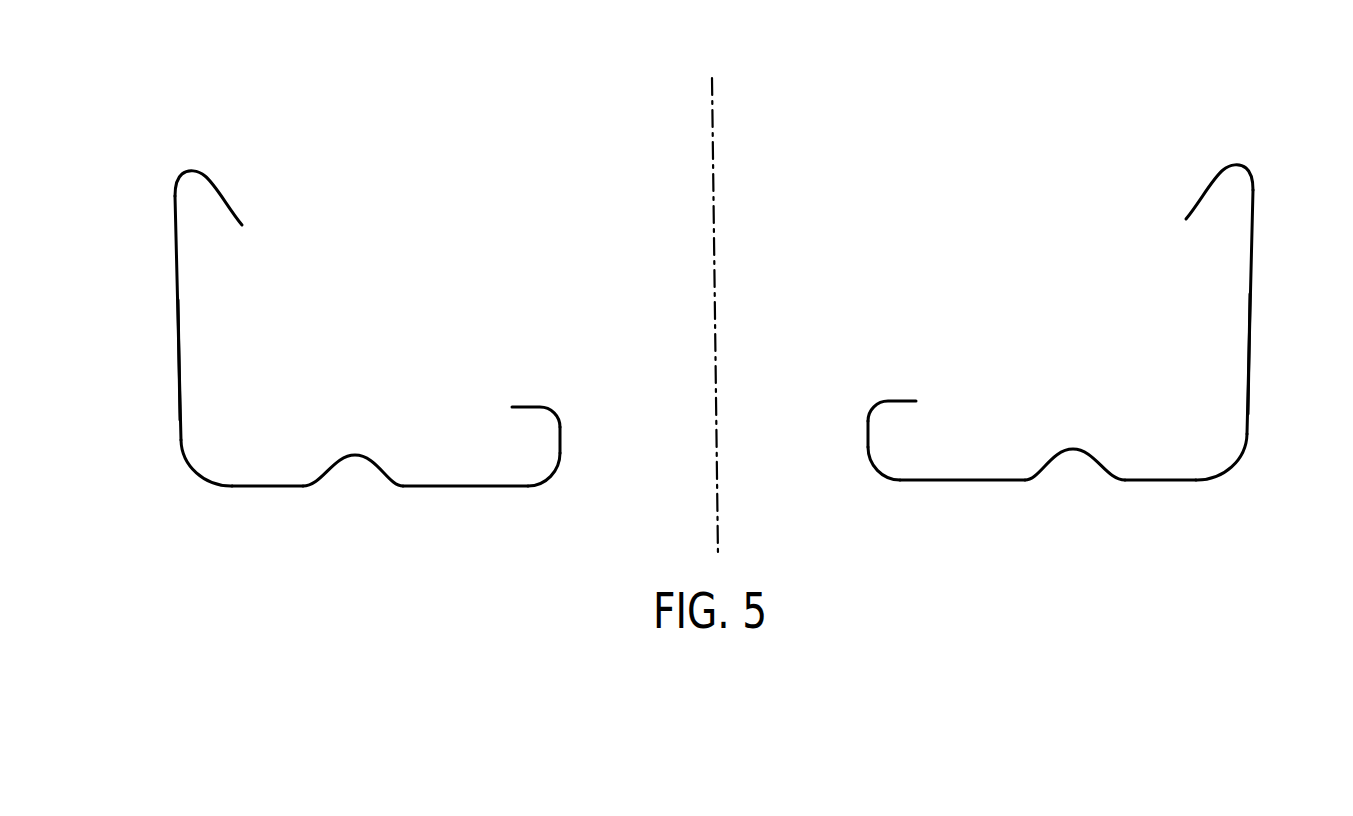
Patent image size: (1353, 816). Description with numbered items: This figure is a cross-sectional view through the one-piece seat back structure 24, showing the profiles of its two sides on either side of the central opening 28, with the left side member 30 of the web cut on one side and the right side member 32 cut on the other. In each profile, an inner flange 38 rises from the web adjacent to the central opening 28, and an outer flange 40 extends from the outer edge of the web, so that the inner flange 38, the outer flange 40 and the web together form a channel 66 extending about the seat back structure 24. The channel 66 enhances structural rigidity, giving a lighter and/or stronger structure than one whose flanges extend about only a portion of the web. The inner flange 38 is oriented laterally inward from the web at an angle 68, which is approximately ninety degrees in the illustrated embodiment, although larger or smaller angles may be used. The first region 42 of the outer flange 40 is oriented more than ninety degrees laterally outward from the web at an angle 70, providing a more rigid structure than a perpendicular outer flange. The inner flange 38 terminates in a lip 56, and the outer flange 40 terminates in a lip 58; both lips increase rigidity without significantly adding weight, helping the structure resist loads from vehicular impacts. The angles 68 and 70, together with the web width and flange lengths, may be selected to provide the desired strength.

The seat back structure 24 is at (657, 62).
The central opening 28 is at (773, 260).
The left side member 30 is at (988, 479).
The right side member 32 is at (263, 485).
The inner flange 38 is at (562, 447).
The outer flange 40 is at (161, 405).
The first region 42 is at (177, 306).
The lip 56 is at (553, 411).
The lip 58 is at (194, 171).
The channel 66 is at (337, 372).
The angle 68 is at (557, 440).
The angle 70 is at (233, 484).